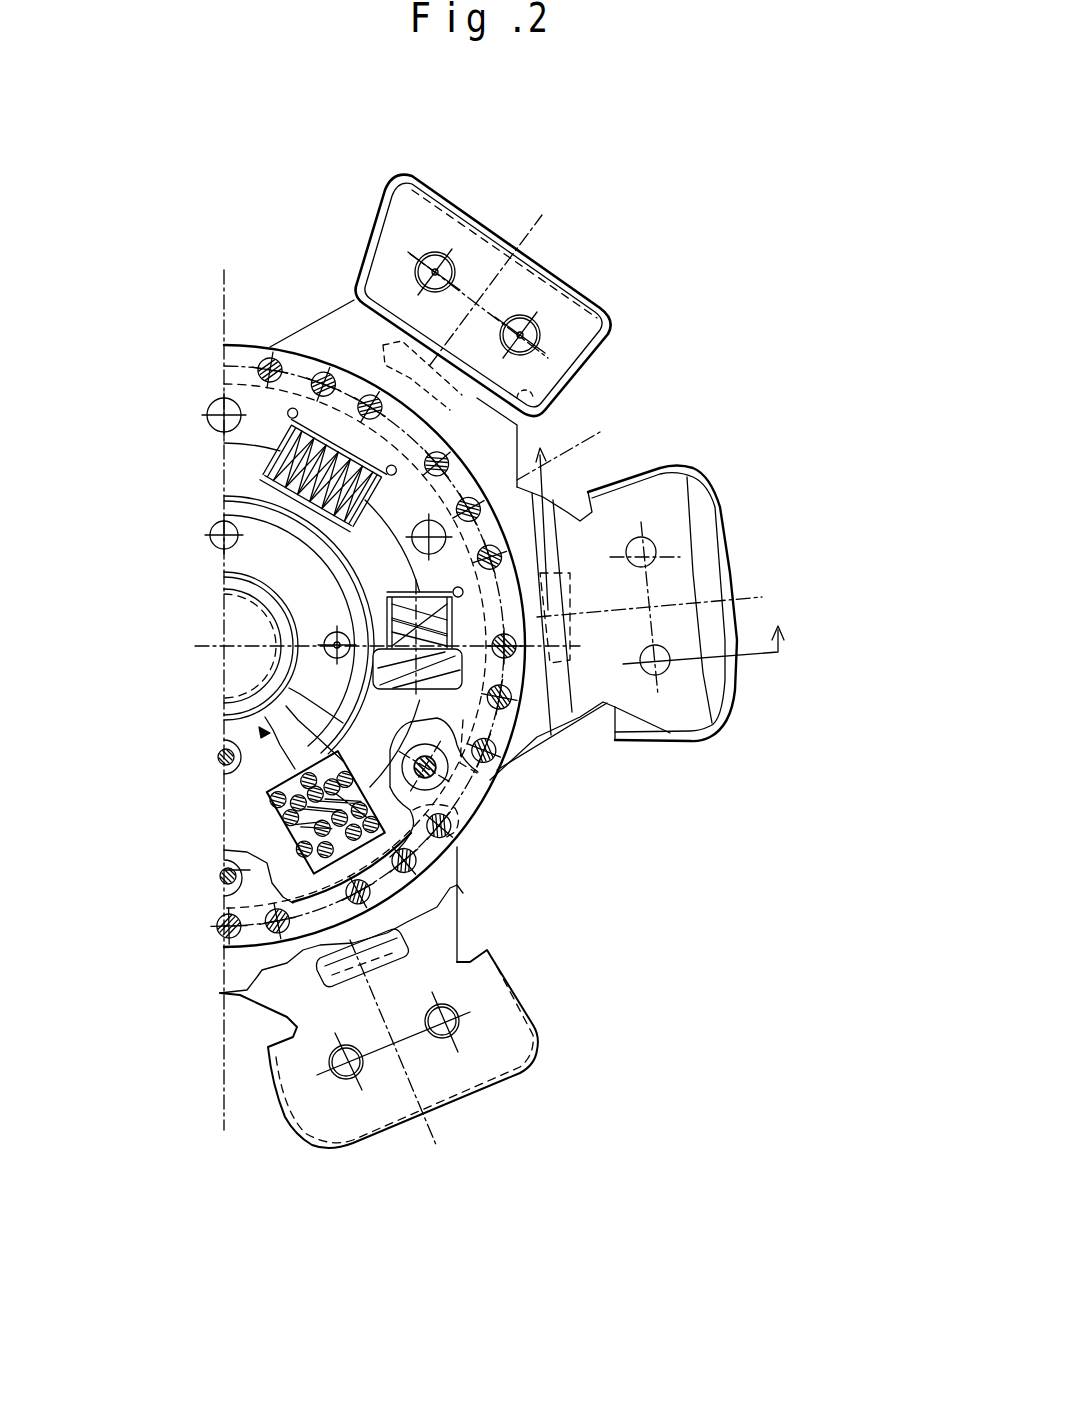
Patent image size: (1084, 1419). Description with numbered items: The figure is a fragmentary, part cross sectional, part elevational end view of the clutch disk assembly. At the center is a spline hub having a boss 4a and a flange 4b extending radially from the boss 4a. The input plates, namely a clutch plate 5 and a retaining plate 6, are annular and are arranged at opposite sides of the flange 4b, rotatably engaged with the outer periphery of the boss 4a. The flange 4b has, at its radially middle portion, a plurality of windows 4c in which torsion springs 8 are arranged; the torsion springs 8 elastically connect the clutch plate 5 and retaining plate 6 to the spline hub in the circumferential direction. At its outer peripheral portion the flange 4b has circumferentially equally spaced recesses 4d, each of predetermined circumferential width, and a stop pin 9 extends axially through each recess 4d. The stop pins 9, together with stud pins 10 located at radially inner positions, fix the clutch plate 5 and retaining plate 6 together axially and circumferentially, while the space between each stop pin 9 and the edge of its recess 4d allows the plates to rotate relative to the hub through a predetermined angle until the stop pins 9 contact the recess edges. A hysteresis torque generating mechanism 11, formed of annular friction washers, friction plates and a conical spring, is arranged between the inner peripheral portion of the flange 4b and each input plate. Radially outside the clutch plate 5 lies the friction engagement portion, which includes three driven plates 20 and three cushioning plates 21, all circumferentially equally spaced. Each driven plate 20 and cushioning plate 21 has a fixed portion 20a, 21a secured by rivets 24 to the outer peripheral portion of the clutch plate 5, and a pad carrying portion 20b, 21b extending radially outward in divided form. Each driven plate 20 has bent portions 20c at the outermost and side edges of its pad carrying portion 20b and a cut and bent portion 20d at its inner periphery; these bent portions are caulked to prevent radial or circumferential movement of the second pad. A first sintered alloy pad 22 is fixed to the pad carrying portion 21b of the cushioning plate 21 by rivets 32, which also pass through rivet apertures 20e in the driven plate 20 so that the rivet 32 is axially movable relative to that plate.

The clutch plate 5 is at (238, 353).
The rivets 24 is at (318, 372).
The retaining plate 6 is at (228, 384).
The hysteresis torque generating mechanism 11 is at (240, 717).
The boss 4a is at (233, 713).
The flange 4b is at (230, 798).
The stud pins 10 is at (222, 750).
The torsion springs 8 is at (280, 818).
The recesses 4d is at (240, 863).
The windows 4c is at (232, 883).
The stop pin 9 is at (442, 787).
The first sintered alloy pad 22 is at (452, 203).
The rivets 32 is at (545, 318).
The cushioning plate 21 is at (648, 497).
The pad carrying portion 21b is at (580, 273).
The fixed portion 21a is at (513, 727).
The fixed portion 20a is at (463, 847).
The driven plate 20 is at (450, 917).
The pad carrying portion 20b is at (545, 1008).
The bent portions 20c is at (497, 967).
The bent portion 20d is at (352, 967).
The rivet apertures 20e is at (430, 1037).